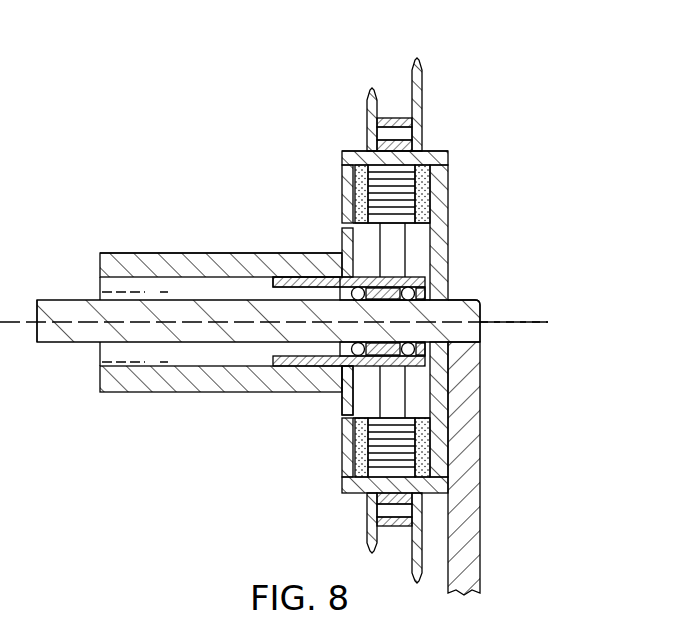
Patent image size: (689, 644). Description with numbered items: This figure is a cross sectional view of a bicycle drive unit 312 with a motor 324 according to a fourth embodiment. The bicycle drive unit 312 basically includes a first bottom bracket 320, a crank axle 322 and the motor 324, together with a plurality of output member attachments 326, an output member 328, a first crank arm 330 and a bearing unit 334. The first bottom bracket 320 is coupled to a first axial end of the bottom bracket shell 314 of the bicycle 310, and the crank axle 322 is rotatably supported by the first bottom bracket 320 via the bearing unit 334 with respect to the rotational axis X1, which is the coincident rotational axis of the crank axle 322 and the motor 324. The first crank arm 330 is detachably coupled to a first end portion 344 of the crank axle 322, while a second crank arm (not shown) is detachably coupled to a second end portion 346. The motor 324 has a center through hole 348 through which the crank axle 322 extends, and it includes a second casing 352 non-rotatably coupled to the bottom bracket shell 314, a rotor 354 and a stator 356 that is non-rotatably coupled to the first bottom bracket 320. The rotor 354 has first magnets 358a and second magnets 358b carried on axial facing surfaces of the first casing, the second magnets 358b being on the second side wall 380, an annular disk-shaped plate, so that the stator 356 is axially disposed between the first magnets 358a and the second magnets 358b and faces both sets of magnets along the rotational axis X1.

The bicycle 310 is at (135, 208).
The bicycle drive unit 312 is at (532, 147).
The bottom bracket shell 314 is at (198, 250).
The first bottom bracket 320 is at (289, 377).
The crank axle 322 is at (60, 345).
The motor 324 is at (323, 156).
The output member attachments 326 is at (396, 113).
The output member 328 is at (378, 72).
The first crank arm 330 is at (484, 540).
The bearing unit 334 is at (322, 287).
The first end portion 344 is at (467, 313).
The second end portion 346 is at (67, 312).
The center through hole 348 is at (399, 306).
The second casing 352 is at (330, 406).
The rotor 354 is at (416, 249).
The stator 356 is at (414, 155).
The first magnets 358a is at (423, 200).
The second magnets 358b is at (356, 190).
The second side wall 380 is at (340, 462).
The rotational axis X1 is at (537, 326).